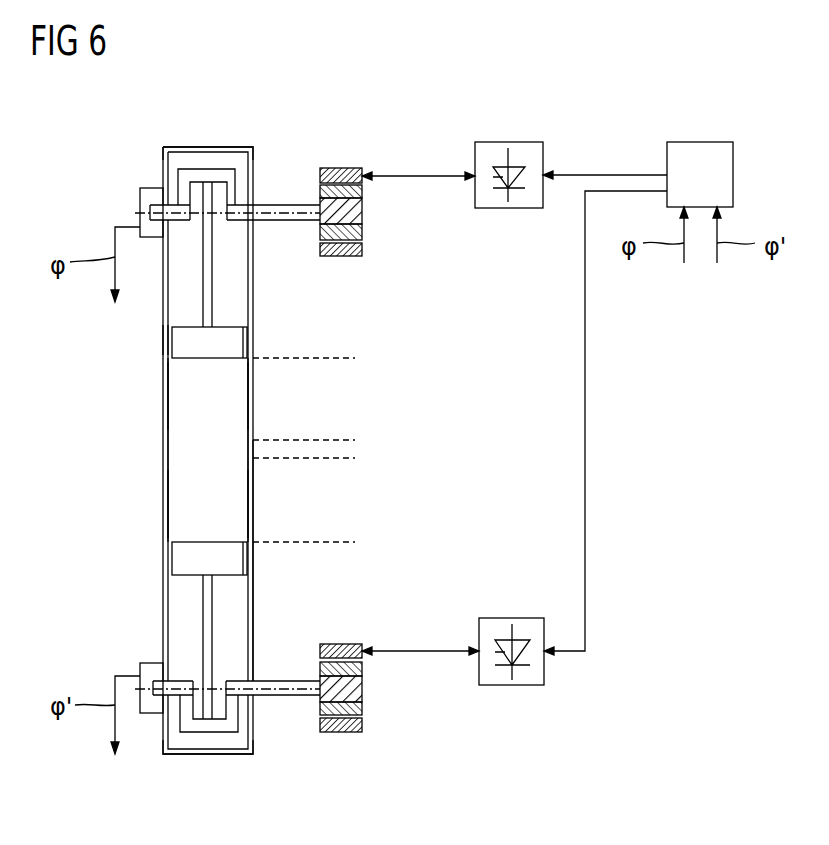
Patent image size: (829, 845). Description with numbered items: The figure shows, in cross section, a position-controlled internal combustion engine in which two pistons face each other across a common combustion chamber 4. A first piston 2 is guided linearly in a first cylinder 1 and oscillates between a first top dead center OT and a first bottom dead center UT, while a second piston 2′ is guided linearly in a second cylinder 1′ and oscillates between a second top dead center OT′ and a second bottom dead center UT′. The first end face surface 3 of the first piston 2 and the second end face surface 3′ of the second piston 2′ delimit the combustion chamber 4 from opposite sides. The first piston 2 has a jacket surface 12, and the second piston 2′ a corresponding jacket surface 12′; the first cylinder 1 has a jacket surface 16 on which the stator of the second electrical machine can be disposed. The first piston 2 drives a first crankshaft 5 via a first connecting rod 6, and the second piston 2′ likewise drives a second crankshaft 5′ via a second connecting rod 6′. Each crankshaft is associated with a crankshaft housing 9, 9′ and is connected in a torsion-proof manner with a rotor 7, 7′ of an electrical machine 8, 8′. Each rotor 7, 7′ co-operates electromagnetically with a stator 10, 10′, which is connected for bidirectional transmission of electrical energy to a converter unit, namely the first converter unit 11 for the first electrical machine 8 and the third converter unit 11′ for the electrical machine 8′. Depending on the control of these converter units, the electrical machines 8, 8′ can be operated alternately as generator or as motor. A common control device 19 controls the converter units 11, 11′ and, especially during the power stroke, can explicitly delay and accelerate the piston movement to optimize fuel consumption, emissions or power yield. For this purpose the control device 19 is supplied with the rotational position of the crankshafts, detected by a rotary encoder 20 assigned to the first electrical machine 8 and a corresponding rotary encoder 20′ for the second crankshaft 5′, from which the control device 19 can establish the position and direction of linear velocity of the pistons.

The first cylinder 1 is at (253, 300).
The second cylinder 1′ is at (255, 645).
The first piston 2 is at (192, 327).
The second piston 2′ is at (172, 563).
The first end face surface 3 is at (186, 361).
The second end face surface 3′ is at (188, 541).
The combustion chamber 4 is at (177, 452).
The first crankshaft 5 is at (206, 169).
The second crankshaft 5′ is at (210, 733).
The first connecting rod 6 is at (213, 280).
The second connecting rod 6′ is at (213, 615).
The rotor 7 is at (362, 190).
The rotor 7′ is at (362, 668).
The first electrical machine 8 is at (345, 160).
The electrical machine 8′ is at (345, 642).
The crankshaft housing 9 is at (163, 166).
The crankshaft housing 9′ is at (180, 756).
The stator 10 is at (340, 257).
The stator 10′ is at (340, 733).
The first converter unit 11 is at (510, 142).
The third converter unit 11′ is at (512, 618).
The jacket surface 12 is at (248, 345).
The jacket surface 12′ is at (250, 558).
The jacket surface 16 is at (163, 340).
The control device 19 is at (700, 142).
The rotary encoder 20 is at (140, 200).
The rotary encoder 20′ is at (150, 663).
The first bottom dead center UT is at (287, 360).
The first top dead center OT is at (337, 438).
The second bottom dead center UT′ is at (337, 540).
The second top dead center OT′ is at (298, 462).